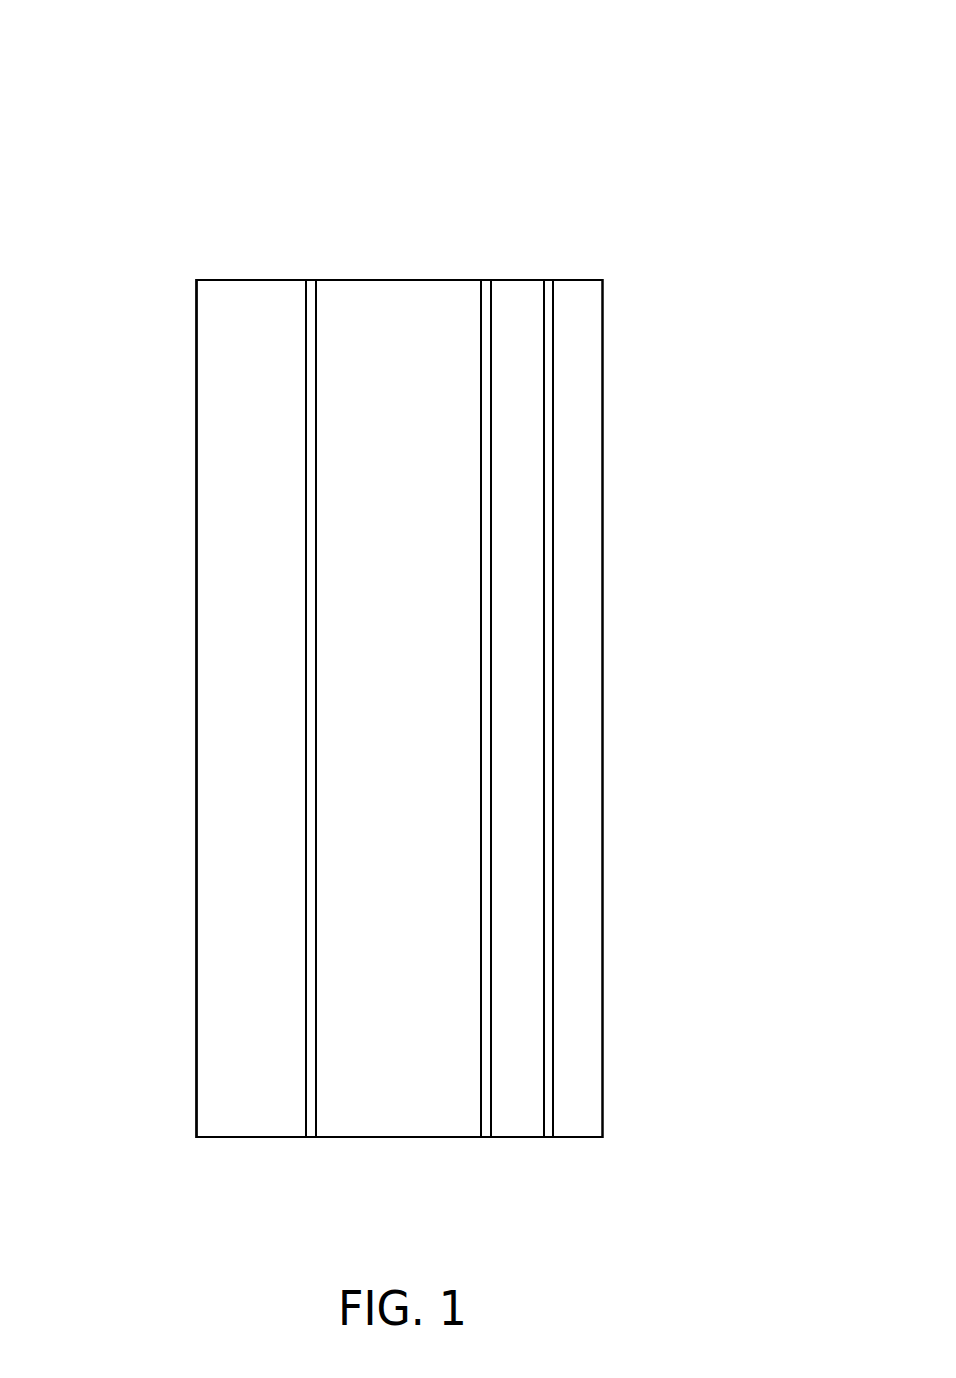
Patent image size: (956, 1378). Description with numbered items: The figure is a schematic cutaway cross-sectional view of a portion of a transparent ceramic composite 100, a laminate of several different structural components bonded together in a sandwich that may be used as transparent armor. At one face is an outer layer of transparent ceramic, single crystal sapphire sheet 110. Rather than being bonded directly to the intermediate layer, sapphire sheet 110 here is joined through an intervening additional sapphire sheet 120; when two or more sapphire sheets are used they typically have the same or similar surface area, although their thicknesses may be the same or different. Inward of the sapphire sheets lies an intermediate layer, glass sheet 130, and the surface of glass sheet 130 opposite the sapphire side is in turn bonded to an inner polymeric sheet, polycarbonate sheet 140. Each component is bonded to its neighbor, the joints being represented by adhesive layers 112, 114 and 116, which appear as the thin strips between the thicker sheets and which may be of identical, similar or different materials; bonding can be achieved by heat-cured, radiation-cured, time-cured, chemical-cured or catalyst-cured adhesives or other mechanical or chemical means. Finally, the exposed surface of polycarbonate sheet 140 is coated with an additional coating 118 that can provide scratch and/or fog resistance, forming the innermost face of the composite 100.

The composite 100 is at (173, 38).
The single crystal sapphire sheet 110 is at (578, 290).
The adhesive layer 112 is at (548, 290).
The adhesive layer 114 is at (485, 290).
The adhesive layer 116 is at (312, 293).
The coating 118 is at (196, 803).
The sapphire sheet 120 is at (517, 290).
The glass sheet 130 is at (428, 290).
The polycarbonate sheet 140 is at (257, 293).